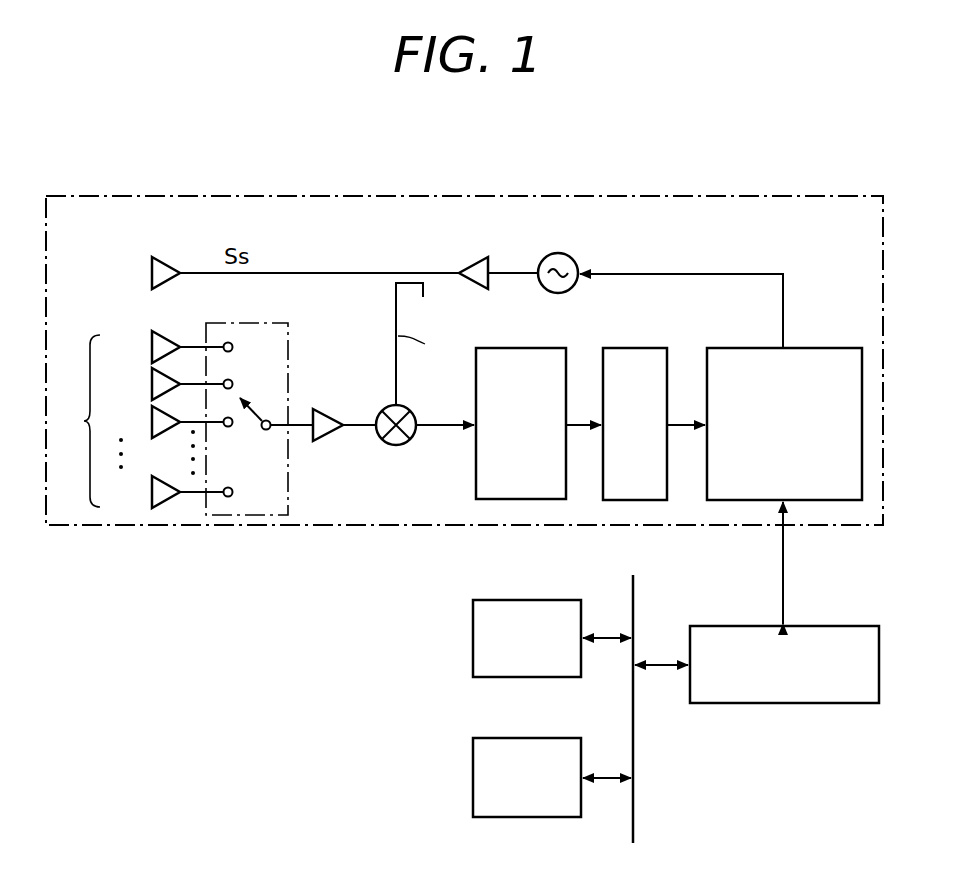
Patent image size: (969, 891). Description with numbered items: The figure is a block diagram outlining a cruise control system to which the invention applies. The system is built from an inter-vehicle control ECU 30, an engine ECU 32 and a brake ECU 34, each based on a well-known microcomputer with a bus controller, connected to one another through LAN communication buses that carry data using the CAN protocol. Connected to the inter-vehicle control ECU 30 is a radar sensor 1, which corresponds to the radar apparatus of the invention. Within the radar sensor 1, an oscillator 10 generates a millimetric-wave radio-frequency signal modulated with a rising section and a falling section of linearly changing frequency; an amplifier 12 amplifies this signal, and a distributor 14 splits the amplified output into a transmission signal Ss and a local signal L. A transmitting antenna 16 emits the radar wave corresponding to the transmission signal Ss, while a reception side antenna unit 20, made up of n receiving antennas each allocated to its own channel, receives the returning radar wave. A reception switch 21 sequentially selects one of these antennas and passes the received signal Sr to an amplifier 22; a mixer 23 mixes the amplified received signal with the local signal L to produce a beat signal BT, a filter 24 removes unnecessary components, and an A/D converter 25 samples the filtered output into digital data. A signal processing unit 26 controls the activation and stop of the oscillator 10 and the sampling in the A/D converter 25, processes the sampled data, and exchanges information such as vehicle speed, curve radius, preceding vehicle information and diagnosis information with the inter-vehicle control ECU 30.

The radar sensor 1 is at (225, 158).
The oscillator 10 is at (562, 256).
The amplifier 12 is at (478, 262).
The distributor 14 is at (392, 280).
The transmitting antenna 16 is at (168, 258).
The reception side antenna unit 20 is at (140, 419).
The reception switch 21 is at (226, 324).
The amplifier 22 is at (323, 442).
The mixer 23 is at (400, 446).
The filter 24 is at (528, 347).
The A/D converter 25 is at (644, 347).
The signal processing unit 26 is at (826, 347).
The inter-vehicle control ECU 30 is at (840, 625).
The engine ECU 32 is at (512, 599).
The brake ECU 34 is at (512, 737).